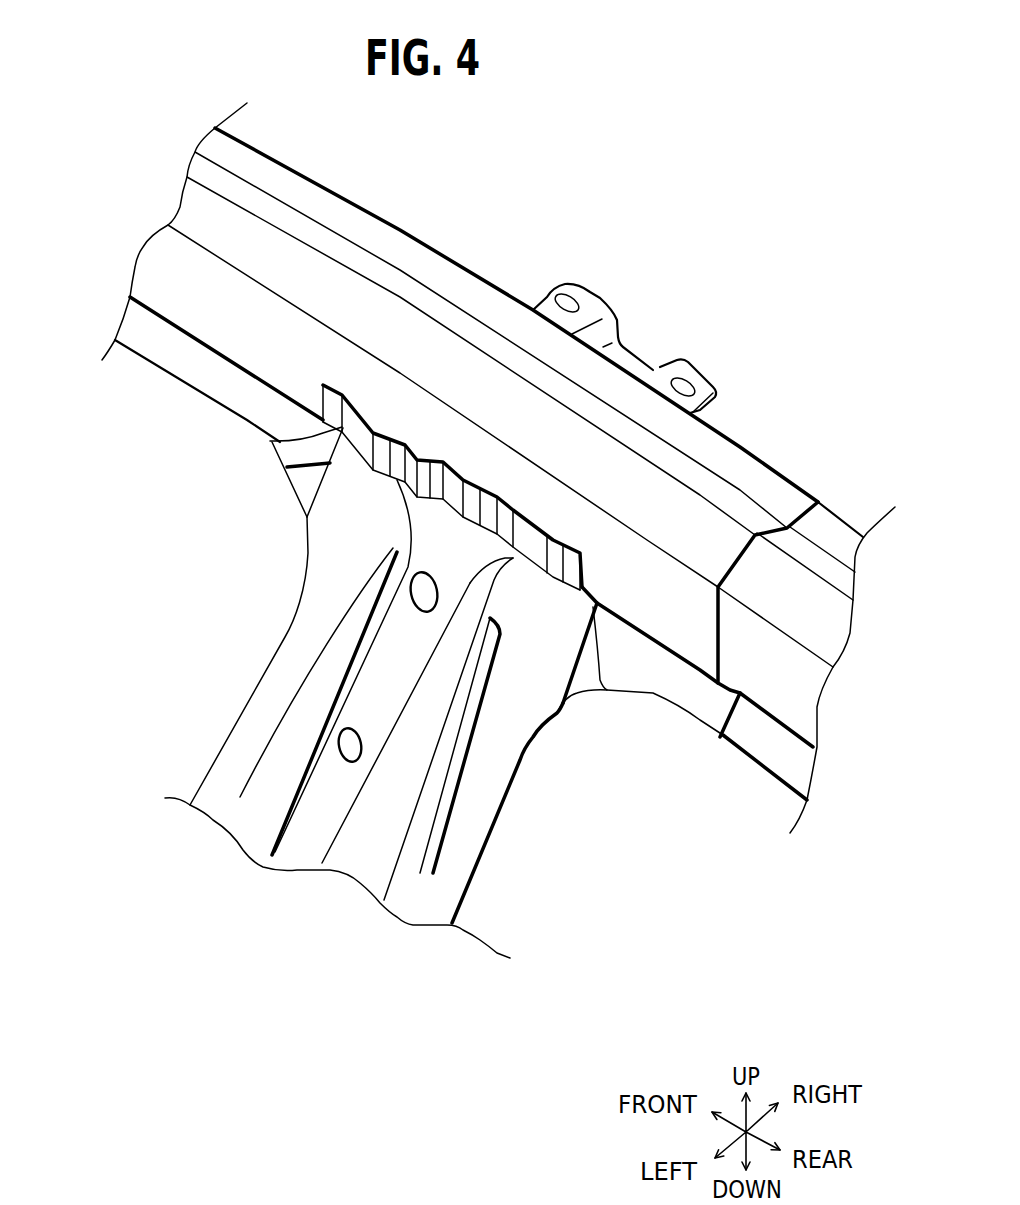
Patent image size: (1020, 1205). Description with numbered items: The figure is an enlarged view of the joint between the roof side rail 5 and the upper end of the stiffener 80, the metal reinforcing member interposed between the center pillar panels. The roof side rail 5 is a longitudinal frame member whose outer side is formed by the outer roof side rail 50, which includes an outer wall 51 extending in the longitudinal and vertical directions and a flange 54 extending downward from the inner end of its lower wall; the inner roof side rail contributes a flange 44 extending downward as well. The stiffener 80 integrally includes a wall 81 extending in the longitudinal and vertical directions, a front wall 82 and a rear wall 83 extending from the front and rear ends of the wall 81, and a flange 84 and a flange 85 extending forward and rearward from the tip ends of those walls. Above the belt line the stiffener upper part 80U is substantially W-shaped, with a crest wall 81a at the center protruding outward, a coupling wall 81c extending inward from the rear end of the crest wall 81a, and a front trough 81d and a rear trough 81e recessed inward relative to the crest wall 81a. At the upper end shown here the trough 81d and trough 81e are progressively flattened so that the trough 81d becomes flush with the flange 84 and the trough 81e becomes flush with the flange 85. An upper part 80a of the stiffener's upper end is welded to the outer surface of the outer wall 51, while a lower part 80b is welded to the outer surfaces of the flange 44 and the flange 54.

The roof side rail 5 is at (140, 163).
The outer roof side rail 50 is at (138, 240).
The outer wall 51 is at (150, 272).
The flange 54 is at (170, 352).
The flange 44 is at (310, 480).
The stiffener 80 is at (429, 709).
The stiffener upper part 80U is at (563, 893).
The upper part 80a is at (270, 441).
The lower part 80b is at (343, 552).
The wall 81 is at (468, 988).
The crest wall 81a is at (313, 840).
The coupling wall 81c is at (363, 857).
The trough 81d is at (280, 815).
The trough 81e is at (410, 866).
The front wall 82 is at (250, 810).
The rear wall 83 is at (470, 740).
The flange 84 is at (257, 713).
The flange 85 is at (480, 800).